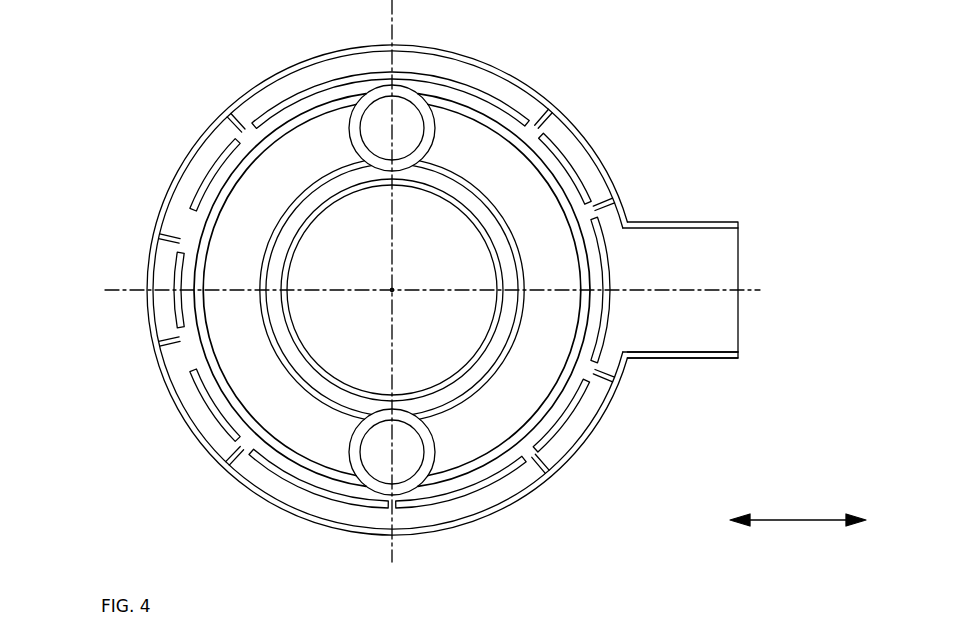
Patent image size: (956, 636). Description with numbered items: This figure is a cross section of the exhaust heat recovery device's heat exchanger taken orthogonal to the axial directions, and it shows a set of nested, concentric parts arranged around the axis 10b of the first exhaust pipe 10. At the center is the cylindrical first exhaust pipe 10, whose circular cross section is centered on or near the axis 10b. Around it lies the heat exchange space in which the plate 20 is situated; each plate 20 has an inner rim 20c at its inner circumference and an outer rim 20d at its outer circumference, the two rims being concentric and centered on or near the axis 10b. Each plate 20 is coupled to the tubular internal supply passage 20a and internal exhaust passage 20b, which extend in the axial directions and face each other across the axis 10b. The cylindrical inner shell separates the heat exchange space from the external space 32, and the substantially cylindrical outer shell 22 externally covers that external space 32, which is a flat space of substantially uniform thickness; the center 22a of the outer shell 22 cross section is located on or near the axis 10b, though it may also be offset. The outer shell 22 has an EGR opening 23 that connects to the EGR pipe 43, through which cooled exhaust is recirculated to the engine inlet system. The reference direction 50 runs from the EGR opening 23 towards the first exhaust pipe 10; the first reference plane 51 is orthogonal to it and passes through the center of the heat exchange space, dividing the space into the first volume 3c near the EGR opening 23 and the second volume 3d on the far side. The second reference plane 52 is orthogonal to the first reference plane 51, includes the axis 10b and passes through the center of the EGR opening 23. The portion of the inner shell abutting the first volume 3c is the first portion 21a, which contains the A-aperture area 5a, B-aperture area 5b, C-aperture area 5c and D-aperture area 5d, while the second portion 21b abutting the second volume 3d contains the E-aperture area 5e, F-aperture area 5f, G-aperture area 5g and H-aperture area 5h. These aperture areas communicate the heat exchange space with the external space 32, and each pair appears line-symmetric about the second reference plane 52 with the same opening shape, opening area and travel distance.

The first volume 3c is at (553, 163).
The second volume 3d is at (216, 184).
The A-aperture area 5a is at (597, 208).
The B-aperture area 5b is at (598, 378).
The C-aperture area 5c is at (537, 126).
The D-aperture area 5d is at (548, 475).
The E-aperture area 5e is at (232, 120).
The F-aperture area 5f is at (231, 466).
The G-aperture area 5g is at (182, 243).
The H-aperture area 5h is at (180, 358).
The first exhaust pipe 10 is at (497, 265).
The axis 10b is at (393, 291).
The plate 20 is at (511, 140).
The internal supply passage 20a is at (377, 140).
The internal exhaust passage 20b is at (377, 464).
The inner rim 20c is at (441, 176).
The outer rim 20d is at (287, 102).
The first portion 21a is at (480, 520).
The second portion 21b is at (342, 510).
The outer shell 22 is at (495, 63).
The center of the cross section of the outer shell 22a is at (392, 290).
The EGR opening 23 is at (640, 259).
The external space 32 is at (572, 445).
The EGR pipe 43 is at (697, 358).
The reference direction 50 is at (810, 514).
The first reference plane 51 is at (400, 560).
The second reference plane 52 is at (105, 288).